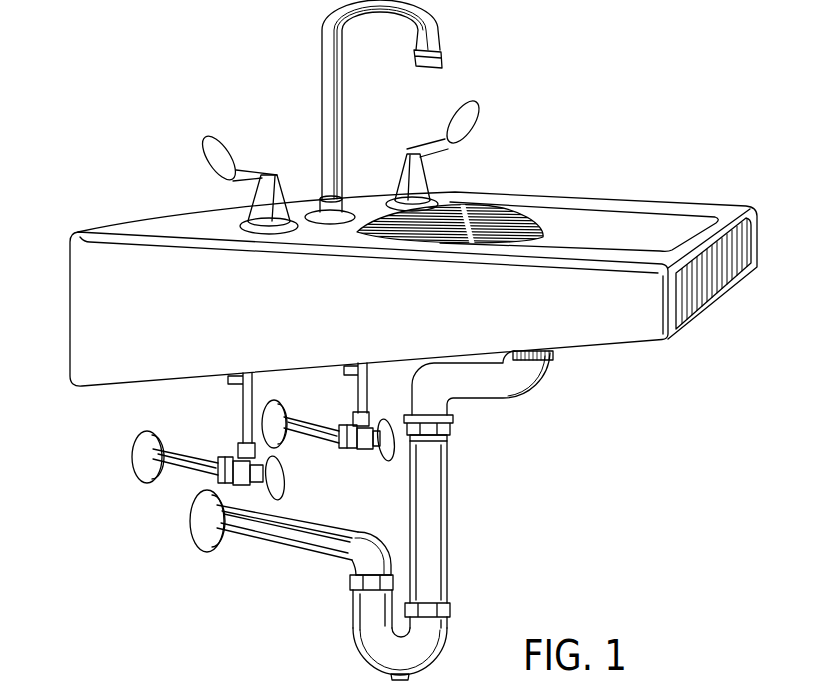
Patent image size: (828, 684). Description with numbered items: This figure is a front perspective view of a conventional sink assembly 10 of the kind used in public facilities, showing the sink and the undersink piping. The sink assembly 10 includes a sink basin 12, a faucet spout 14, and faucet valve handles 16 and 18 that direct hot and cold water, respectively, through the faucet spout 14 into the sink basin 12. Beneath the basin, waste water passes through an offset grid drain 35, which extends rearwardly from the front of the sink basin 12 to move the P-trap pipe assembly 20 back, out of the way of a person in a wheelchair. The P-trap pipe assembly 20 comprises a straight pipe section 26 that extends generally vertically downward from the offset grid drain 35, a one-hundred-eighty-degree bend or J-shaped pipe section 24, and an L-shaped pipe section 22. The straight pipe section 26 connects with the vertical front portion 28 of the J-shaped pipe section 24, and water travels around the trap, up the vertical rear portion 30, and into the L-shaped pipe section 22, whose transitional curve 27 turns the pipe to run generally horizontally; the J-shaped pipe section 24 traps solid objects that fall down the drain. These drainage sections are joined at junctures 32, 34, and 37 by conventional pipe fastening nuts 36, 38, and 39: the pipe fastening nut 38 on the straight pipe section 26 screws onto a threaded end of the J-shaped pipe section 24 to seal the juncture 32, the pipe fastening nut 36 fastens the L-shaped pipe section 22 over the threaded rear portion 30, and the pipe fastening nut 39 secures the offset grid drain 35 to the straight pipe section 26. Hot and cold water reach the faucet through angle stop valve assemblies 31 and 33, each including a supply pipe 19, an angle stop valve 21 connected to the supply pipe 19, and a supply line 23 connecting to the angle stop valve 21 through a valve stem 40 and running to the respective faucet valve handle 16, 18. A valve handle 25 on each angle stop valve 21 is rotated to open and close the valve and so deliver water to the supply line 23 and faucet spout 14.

The sink assembly 10 is at (672, 96).
The sink basin 12 is at (370, 290).
The faucet spout 14 is at (436, 22).
The faucet valve handle 16 is at (207, 156).
The faucet valve handle 18 is at (479, 127).
The supply pipe 19 is at (165, 437).
The P-trap pipe assembly 20 is at (494, 518).
The angle stop valve 21 is at (237, 460).
The L-shaped pipe section 22 is at (263, 547).
The supply line 23 is at (236, 378).
The J-shaped pipe section 24 is at (368, 641).
The valve handle 25 is at (286, 493).
The straight pipe section 26 is at (430, 491).
The transitional curve 27 is at (380, 537).
The vertical front portion 28 is at (447, 622).
The vertical rear portion 30 is at (353, 598).
The angle stop valve assembly 31 is at (172, 471).
The juncture 32 is at (352, 572).
The angle stop valve assembly 33 is at (340, 420).
The juncture 34 is at (450, 607).
The offset grid drain 35 is at (523, 402).
The pipe fastening nut 36 is at (348, 581).
The juncture 37 is at (448, 413).
The pipe fastening nut 38 is at (447, 641).
The pipe fastening nut 39 is at (438, 438).
The valve stem 40 is at (239, 446).